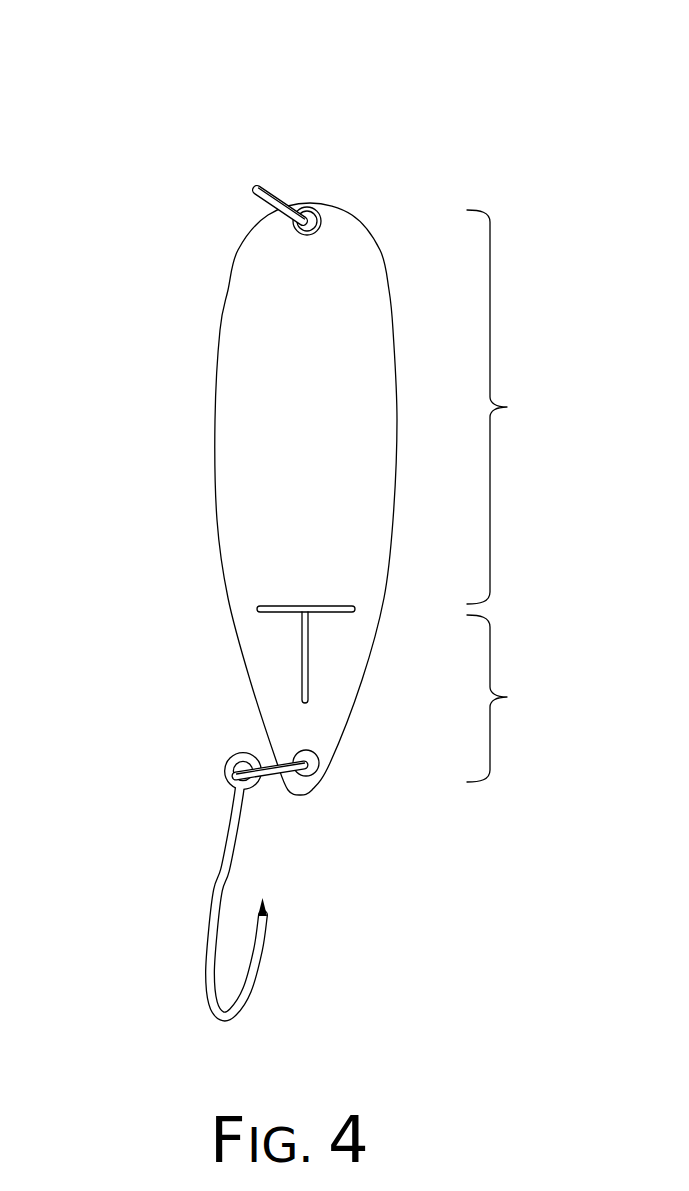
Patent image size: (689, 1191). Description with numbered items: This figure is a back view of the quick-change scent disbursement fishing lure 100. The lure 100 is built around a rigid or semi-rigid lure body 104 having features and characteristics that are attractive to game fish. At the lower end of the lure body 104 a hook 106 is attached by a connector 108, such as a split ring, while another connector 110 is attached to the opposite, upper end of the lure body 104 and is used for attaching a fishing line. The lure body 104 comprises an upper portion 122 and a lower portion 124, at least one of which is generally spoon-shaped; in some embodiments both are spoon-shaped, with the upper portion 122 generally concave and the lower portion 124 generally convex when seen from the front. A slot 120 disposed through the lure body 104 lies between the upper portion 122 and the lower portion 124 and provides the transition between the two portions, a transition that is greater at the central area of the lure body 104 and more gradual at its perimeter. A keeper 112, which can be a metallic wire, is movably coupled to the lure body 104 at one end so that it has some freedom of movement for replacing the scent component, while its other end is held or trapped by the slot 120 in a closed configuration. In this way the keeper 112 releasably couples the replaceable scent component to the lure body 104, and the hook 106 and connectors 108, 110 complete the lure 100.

The lure 100 is at (124, 40).
The lure body 104 is at (232, 289).
The hook 106 is at (205, 998).
The connector 108 is at (268, 775).
The connector 110 is at (262, 188).
The keeper 112 is at (300, 661).
The slot 120 is at (270, 610).
The upper portion 122 is at (516, 407).
The lower portion 124 is at (516, 698).